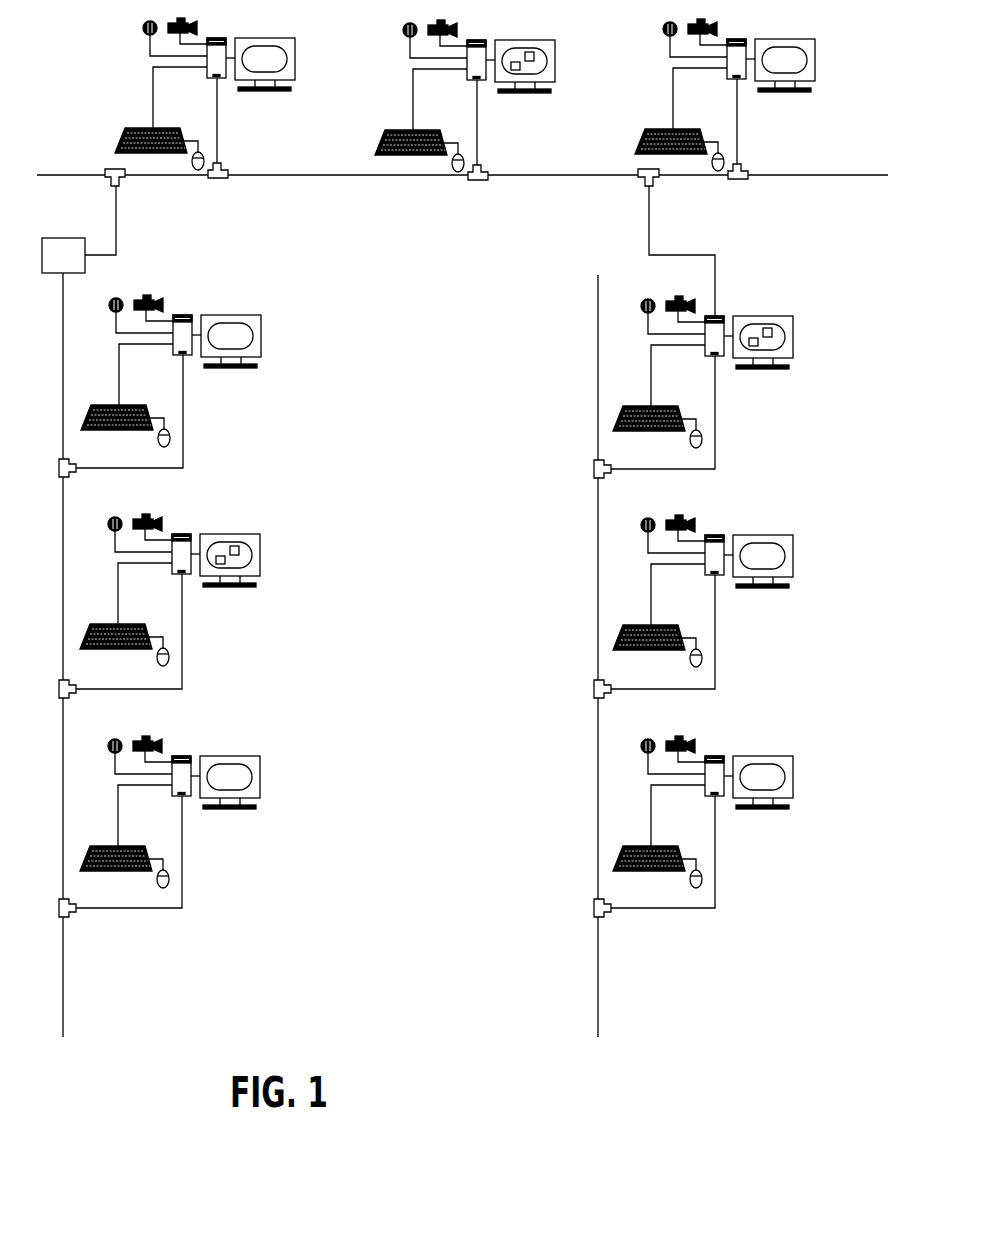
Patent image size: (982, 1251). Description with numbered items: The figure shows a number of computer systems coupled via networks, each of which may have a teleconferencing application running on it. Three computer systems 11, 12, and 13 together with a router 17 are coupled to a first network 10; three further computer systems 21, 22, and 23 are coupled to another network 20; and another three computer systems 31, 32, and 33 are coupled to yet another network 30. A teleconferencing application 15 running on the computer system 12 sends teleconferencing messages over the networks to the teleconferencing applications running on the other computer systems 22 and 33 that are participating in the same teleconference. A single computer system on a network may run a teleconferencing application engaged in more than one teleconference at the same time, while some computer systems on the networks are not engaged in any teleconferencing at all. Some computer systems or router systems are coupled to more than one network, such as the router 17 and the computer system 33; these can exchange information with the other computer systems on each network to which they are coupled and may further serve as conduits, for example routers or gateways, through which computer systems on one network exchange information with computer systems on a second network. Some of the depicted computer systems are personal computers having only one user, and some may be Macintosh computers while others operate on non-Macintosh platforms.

The network 10 is at (74, 1006).
The computer system 11 is at (197, 813).
The computer system 12 is at (202, 601).
The computer system 13 is at (197, 376).
The teleconferencing application 15 is at (238, 560).
The router 17 is at (79, 229).
The network 20 is at (866, 124).
The computer system 21 is at (276, 111).
The computer system 22 is at (494, 114).
The computer system 23 is at (772, 119).
The network 30 is at (610, 1012).
The computer system 31 is at (729, 821).
The computer system 32 is at (729, 595).
The computer system 33 is at (729, 377).